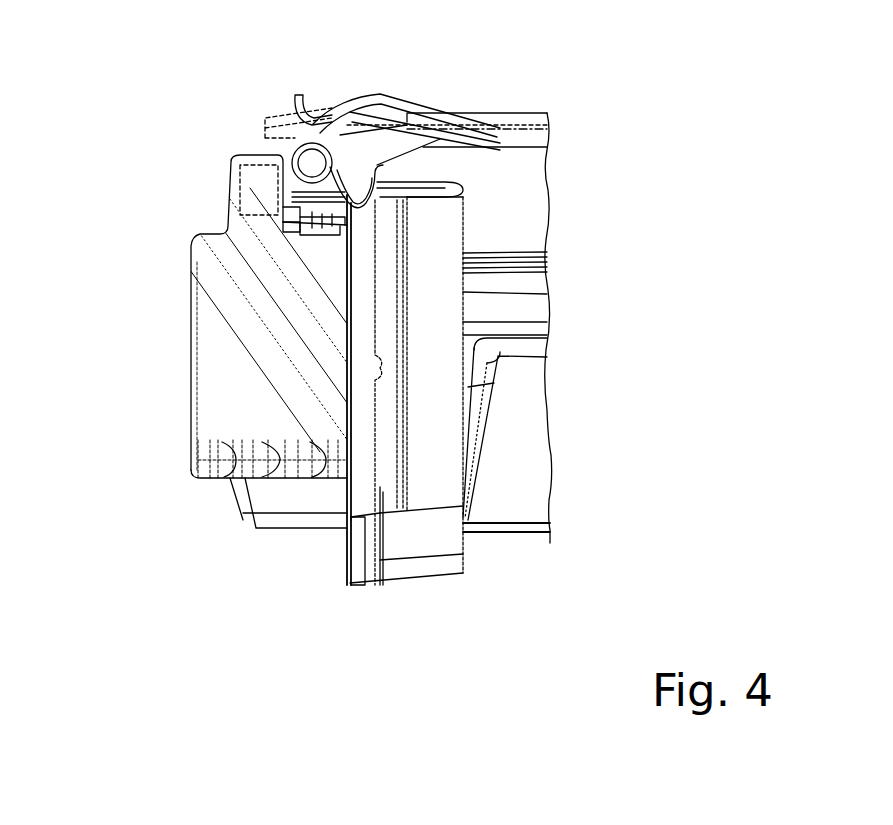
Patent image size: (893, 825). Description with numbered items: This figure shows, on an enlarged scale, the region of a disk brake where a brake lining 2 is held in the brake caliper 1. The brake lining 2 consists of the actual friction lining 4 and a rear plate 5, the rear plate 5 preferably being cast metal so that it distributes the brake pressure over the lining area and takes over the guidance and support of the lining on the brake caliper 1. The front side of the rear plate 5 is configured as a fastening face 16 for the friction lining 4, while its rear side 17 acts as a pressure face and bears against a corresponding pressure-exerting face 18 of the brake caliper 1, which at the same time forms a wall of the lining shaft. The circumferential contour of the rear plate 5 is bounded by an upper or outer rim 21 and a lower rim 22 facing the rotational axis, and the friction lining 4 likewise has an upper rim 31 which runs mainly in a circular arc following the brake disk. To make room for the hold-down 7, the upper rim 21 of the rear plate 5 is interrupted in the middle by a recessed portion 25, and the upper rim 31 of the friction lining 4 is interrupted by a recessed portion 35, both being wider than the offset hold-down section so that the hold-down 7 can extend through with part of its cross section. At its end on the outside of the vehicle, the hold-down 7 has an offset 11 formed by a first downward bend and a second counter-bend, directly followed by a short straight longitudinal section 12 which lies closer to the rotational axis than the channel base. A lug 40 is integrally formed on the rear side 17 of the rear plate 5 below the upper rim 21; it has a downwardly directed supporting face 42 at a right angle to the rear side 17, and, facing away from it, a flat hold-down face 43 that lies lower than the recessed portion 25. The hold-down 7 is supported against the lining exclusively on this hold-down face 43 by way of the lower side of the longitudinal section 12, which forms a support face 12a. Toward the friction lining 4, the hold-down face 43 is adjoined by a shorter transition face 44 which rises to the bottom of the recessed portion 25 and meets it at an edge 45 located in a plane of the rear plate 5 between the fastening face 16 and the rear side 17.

The brake caliper 1 is at (243, 418).
The brake lining 2 is at (433, 594).
The friction lining 4 is at (433, 542).
The rear plate 5 is at (368, 505).
The hold-down 7 is at (500, 140).
The offset 11 is at (362, 173).
The straight longitudinal section 12 is at (353, 200).
The support face 12a is at (308, 222).
The fastening face 16 is at (373, 448).
The rear side 17 is at (348, 497).
The pressure-exerting face 18 is at (347, 382).
The upper rim 21 is at (365, 172).
The lower rim 22 is at (350, 582).
The recessed portion 25 is at (377, 183).
The upper rim 31 is at (433, 185).
The recessed portion 35 is at (447, 197).
The lug 40 is at (330, 226).
The supporting face 42 is at (310, 228).
The hold-down face 43 is at (310, 208).
The transition face 44 is at (352, 200).
The edge 45 is at (350, 192).